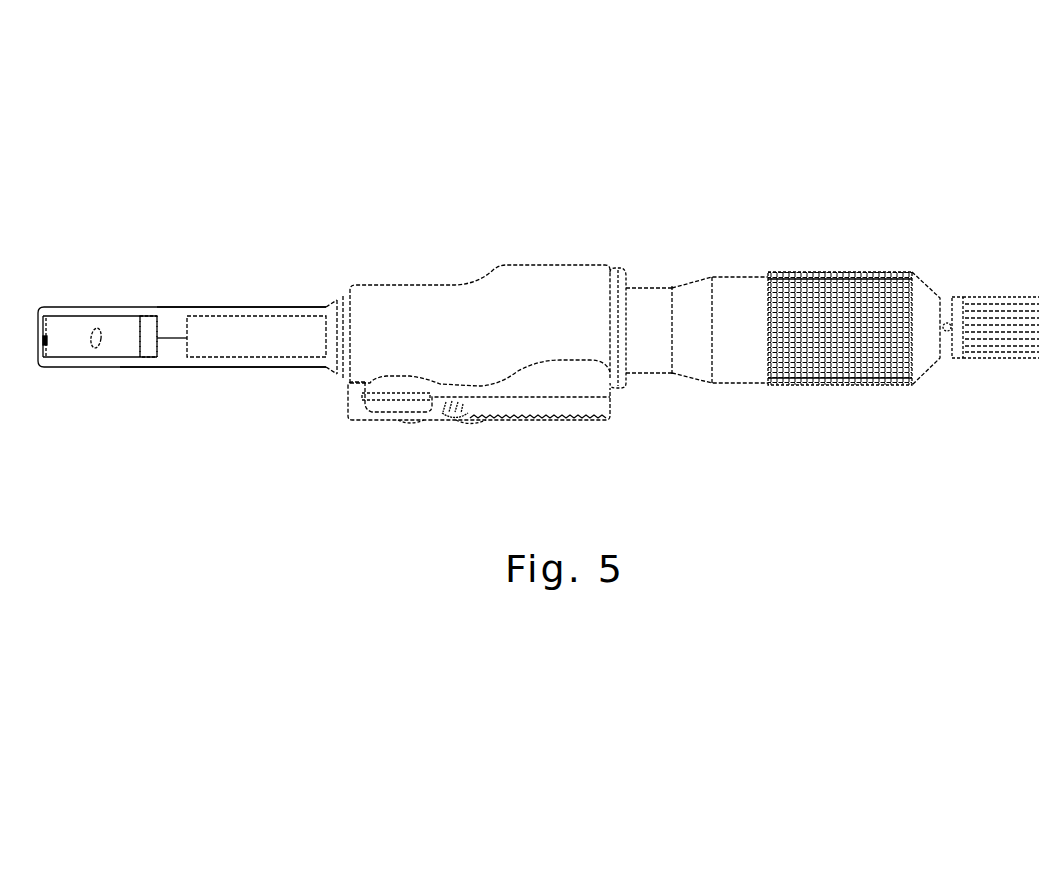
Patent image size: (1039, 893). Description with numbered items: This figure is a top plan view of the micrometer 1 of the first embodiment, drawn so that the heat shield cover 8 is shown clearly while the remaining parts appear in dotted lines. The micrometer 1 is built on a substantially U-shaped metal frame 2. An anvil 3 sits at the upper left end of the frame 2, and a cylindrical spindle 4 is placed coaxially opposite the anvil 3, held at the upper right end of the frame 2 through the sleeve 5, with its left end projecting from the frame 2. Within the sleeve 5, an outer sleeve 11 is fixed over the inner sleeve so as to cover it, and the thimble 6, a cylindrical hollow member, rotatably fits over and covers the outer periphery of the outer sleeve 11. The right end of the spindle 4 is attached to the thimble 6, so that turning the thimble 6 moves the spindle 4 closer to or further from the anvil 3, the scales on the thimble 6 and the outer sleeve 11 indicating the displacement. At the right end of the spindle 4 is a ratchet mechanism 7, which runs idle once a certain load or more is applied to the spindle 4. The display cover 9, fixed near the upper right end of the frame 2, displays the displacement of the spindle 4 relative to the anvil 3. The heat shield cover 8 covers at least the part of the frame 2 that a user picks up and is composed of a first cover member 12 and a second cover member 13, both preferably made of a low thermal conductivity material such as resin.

The micrometer 1 is at (922, 52).
The frame 2 is at (490, 290).
The anvil 3 is at (147, 325).
The spindle 4 is at (257, 323).
The sleeve 5 is at (652, 280).
The thimble 6 is at (810, 274).
The ratchet mechanism 7 is at (962, 287).
The heat shield cover 8 is at (131, 387).
The display cover 9 is at (447, 413).
The outer sleeve 11 is at (647, 360).
The first cover member 12 is at (180, 366).
The second cover member 13 is at (190, 307).